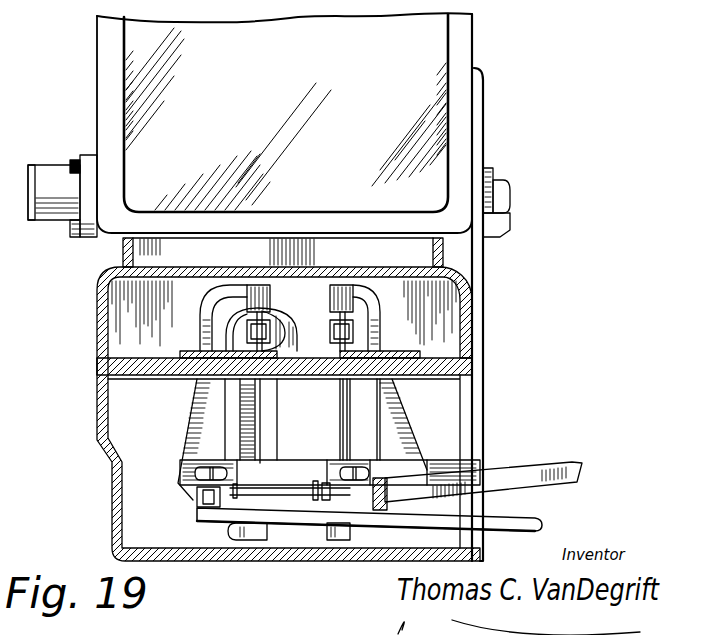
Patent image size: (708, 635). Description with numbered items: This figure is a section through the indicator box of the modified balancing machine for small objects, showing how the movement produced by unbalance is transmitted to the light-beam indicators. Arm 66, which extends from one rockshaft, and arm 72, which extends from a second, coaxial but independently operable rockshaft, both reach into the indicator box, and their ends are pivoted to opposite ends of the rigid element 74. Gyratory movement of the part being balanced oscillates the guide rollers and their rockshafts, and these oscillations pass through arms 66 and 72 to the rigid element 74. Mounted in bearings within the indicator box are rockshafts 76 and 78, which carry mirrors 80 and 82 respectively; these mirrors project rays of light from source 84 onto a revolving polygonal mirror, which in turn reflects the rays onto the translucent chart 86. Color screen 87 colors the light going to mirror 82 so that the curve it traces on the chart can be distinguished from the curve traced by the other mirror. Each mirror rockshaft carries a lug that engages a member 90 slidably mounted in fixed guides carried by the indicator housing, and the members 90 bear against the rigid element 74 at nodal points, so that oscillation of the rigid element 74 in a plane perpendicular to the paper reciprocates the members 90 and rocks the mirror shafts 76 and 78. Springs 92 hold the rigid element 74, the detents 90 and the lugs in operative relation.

The arm 66 is at (546, 466).
The arm 72 is at (520, 518).
The rigid element 74 is at (293, 476).
The rockshaft 76 is at (260, 407).
The rockshaft 78 is at (340, 436).
The mirror 80 is at (256, 313).
The mirror 82 is at (330, 318).
The light source 84 is at (293, 337).
The translucent chart 86 is at (433, 48).
The color screen 87 is at (247, 333).
The member 90 is at (327, 480).
The spring 92 is at (220, 462).